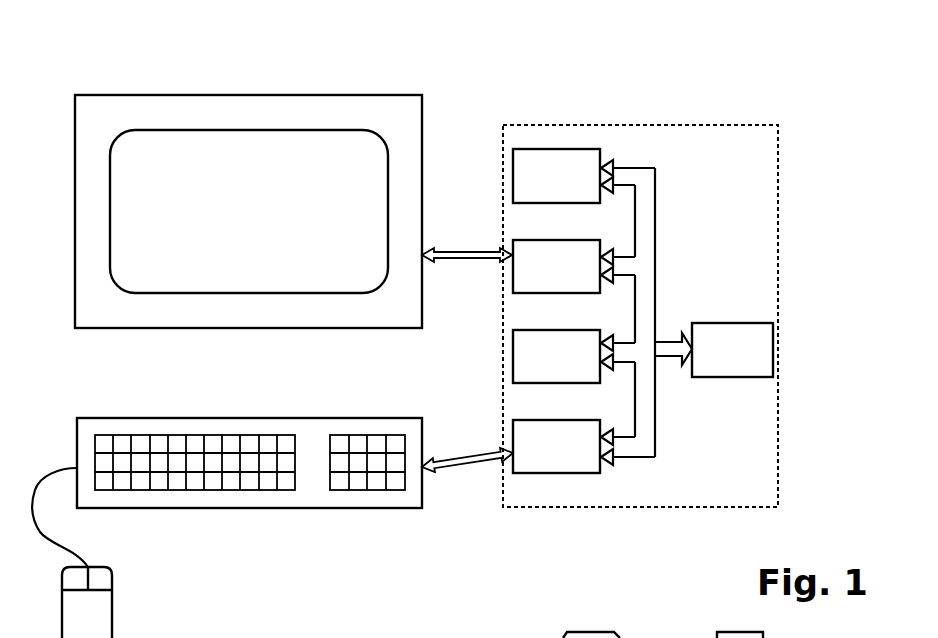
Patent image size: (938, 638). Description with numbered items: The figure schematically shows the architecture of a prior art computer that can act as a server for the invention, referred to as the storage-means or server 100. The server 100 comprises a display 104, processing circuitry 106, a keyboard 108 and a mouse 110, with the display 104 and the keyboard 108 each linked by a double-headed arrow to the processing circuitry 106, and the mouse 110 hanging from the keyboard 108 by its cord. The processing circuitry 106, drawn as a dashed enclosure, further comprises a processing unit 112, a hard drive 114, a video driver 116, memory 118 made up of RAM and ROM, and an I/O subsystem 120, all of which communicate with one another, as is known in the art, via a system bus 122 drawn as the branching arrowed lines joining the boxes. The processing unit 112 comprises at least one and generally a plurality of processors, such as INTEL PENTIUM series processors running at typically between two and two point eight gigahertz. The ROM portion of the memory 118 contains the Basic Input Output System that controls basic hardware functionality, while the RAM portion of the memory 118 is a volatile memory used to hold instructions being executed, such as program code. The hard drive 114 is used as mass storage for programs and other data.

The server 100 is at (490, 62).
The display 104 is at (199, 212).
The processing circuitry 106 is at (778, 242).
The keyboard 108 is at (298, 508).
The mouse 110 is at (112, 590).
The processing unit 112 is at (702, 364).
The hard drive 114 is at (526, 191).
The video driver 116 is at (526, 281).
The memory 118 is at (526, 371).
The I/O subsystem 120 is at (526, 461).
The system bus 122 is at (655, 222).